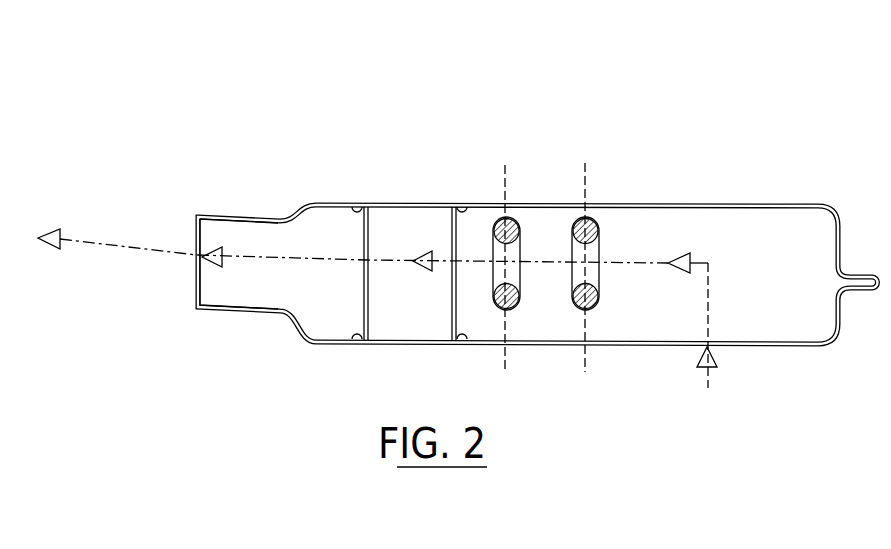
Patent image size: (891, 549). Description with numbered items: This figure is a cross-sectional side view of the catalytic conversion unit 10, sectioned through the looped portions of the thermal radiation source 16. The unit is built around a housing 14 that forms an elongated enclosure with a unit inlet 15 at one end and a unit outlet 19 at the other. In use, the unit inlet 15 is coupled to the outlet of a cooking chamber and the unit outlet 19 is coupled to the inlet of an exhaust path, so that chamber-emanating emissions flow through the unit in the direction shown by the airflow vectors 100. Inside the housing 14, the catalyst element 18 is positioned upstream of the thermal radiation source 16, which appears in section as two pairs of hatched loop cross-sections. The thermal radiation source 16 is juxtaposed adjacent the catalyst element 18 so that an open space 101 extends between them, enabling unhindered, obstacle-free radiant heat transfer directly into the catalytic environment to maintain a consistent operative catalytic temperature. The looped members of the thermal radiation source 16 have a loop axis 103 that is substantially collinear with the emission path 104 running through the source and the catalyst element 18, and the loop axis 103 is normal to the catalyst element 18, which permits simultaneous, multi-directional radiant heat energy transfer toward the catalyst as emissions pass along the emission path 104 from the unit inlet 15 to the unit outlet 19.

The catalytic conversion unit 10 is at (538, 214).
The housing 14 is at (513, 344).
The unit inlet 15 is at (675, 345).
The thermal radiation source 16 is at (522, 223).
The catalyst element 18 is at (413, 225).
The unit outlet 19 is at (198, 230).
The airflow vector 100 is at (75, 240).
The open space 101 is at (503, 163).
The loop axis 103 is at (630, 263).
The emission path 104 is at (364, 251).